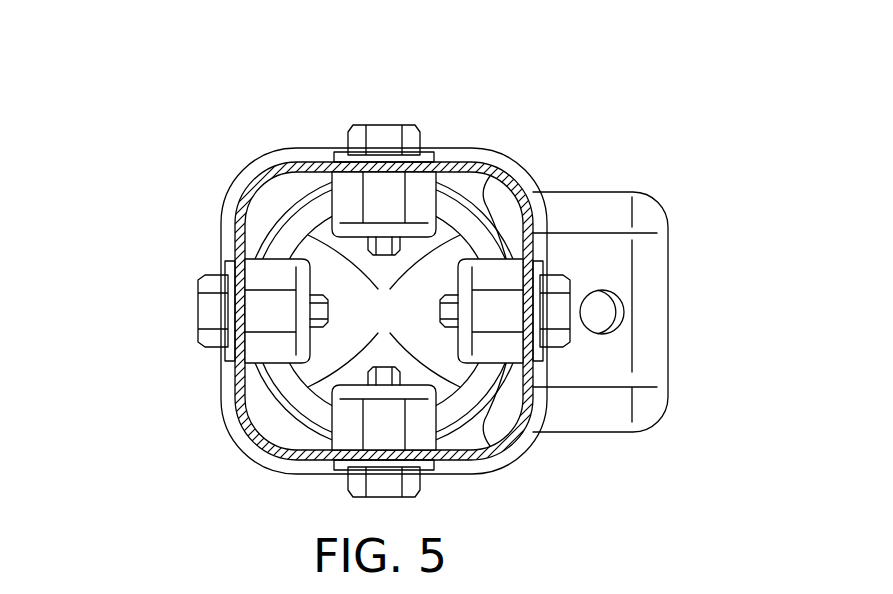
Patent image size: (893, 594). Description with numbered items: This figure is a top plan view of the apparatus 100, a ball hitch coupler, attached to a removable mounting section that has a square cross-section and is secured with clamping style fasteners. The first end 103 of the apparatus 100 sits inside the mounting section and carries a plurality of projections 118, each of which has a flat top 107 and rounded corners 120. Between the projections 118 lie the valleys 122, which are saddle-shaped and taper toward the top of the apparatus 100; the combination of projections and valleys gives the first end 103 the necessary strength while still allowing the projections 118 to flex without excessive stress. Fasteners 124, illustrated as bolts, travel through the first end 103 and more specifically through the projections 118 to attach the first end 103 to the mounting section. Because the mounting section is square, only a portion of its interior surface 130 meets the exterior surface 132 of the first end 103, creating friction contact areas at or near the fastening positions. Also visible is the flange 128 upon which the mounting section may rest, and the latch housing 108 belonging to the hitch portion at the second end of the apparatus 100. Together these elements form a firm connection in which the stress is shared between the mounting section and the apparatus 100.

The apparatus 100 is at (200, 150).
The first end 103 is at (273, 233).
The flat top 107 is at (342, 200).
The latch housing 108 is at (597, 417).
The projections 118 is at (471, 277).
The rounded corners 120 is at (328, 198).
The valleys 122 is at (384, 311).
The fastener 124 is at (382, 140).
The flange 128 is at (223, 243).
The interior surface 130 is at (503, 170).
The exterior surface 132 is at (505, 433).